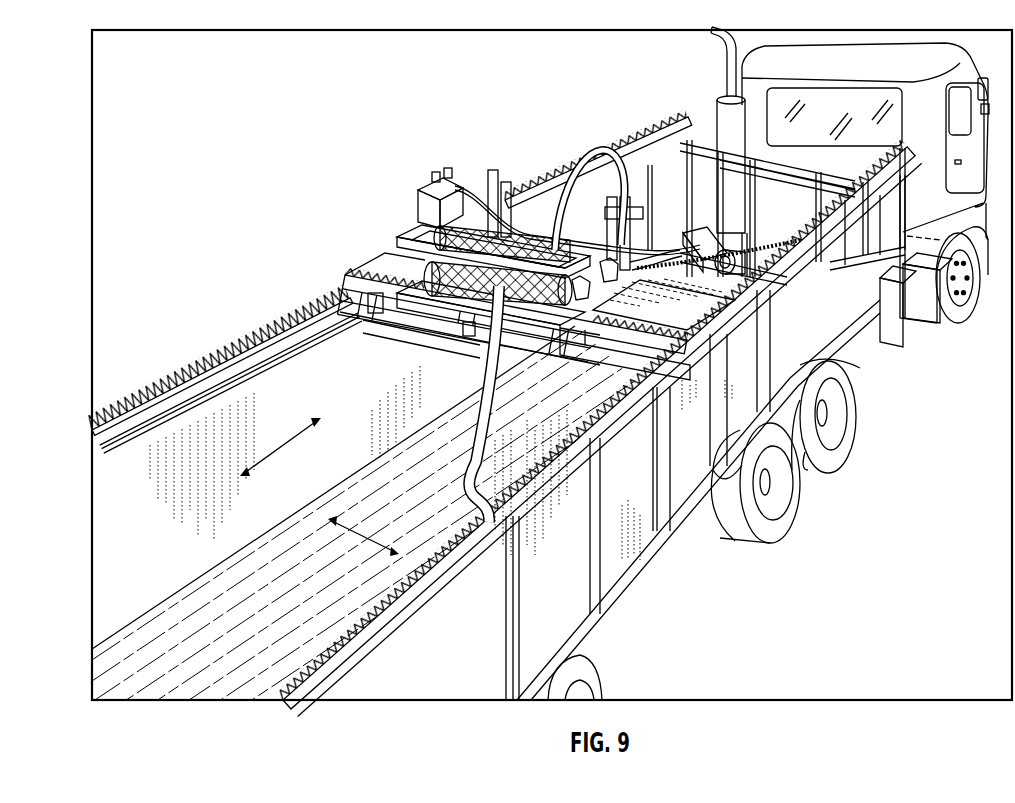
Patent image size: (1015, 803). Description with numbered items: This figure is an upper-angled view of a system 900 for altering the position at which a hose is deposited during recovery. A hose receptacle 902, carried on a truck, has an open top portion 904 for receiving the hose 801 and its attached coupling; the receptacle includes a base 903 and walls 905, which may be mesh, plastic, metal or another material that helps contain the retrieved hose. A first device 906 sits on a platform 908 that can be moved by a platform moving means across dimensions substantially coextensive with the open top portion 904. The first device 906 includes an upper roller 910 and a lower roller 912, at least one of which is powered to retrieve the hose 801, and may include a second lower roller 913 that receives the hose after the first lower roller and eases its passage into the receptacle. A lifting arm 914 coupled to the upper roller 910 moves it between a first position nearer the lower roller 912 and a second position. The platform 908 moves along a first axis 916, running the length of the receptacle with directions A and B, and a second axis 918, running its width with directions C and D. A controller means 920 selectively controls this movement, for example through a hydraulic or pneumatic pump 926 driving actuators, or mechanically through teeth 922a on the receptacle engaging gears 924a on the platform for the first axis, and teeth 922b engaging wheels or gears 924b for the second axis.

The system 900 is at (260, 131).
The hose 801 is at (592, 140).
The hydraulic or pneumatic pump 926 is at (668, 130).
The lower roller 912 is at (626, 178).
The lifting arm 914 is at (547, 197).
The first device 906 is at (405, 197).
The upper roller 910 is at (420, 232).
The second lower roller 913 is at (418, 271).
The hose receptacle 902 is at (139, 382).
The walls 905 is at (256, 438).
The platform 908 is at (396, 328).
The first axis 916 is at (302, 436).
The second axis 918 is at (362, 548).
The open top portion 904 is at (112, 524).
The base 903 is at (190, 622).
The wheels or gears 924b is at (588, 345).
The teeth 922b is at (641, 318).
The controller means 920 is at (873, 303).
The gears 924a is at (745, 300).
The teeth 922a is at (675, 335).